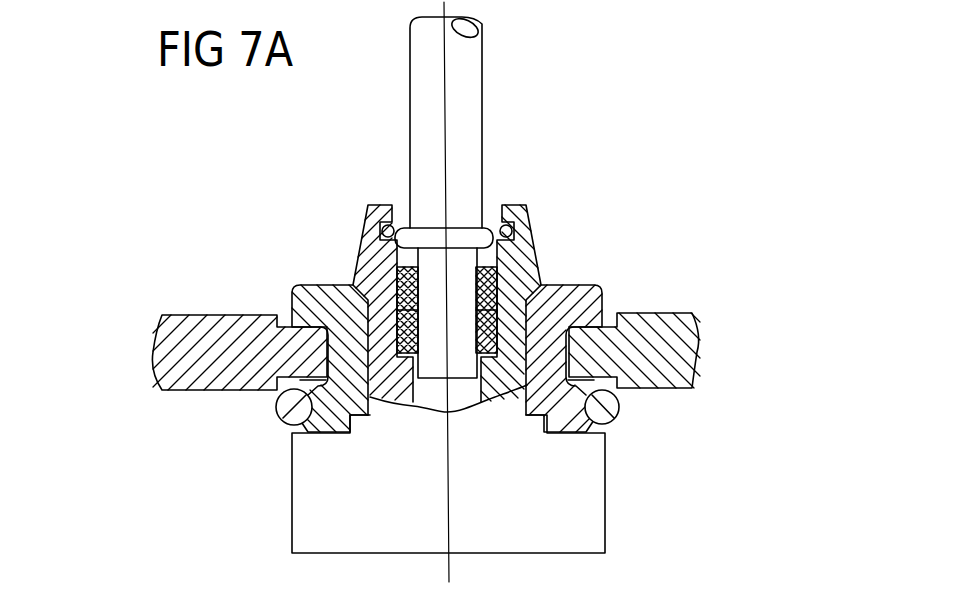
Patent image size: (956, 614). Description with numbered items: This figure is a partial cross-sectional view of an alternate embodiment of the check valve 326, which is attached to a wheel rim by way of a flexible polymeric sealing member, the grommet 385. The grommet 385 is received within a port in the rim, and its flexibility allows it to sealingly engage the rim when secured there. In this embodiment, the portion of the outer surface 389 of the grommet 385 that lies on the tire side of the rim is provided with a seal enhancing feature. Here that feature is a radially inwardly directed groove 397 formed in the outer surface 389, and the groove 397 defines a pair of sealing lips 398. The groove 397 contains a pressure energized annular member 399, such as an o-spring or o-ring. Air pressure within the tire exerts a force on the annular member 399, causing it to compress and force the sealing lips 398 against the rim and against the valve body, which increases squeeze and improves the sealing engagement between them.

The check valve 326 is at (312, 198).
The grommet 385 is at (594, 276).
The outer wall 389 is at (608, 303).
The groove 397 is at (563, 425).
The sealing lips 398 is at (302, 378).
The annular member 399 is at (620, 408).